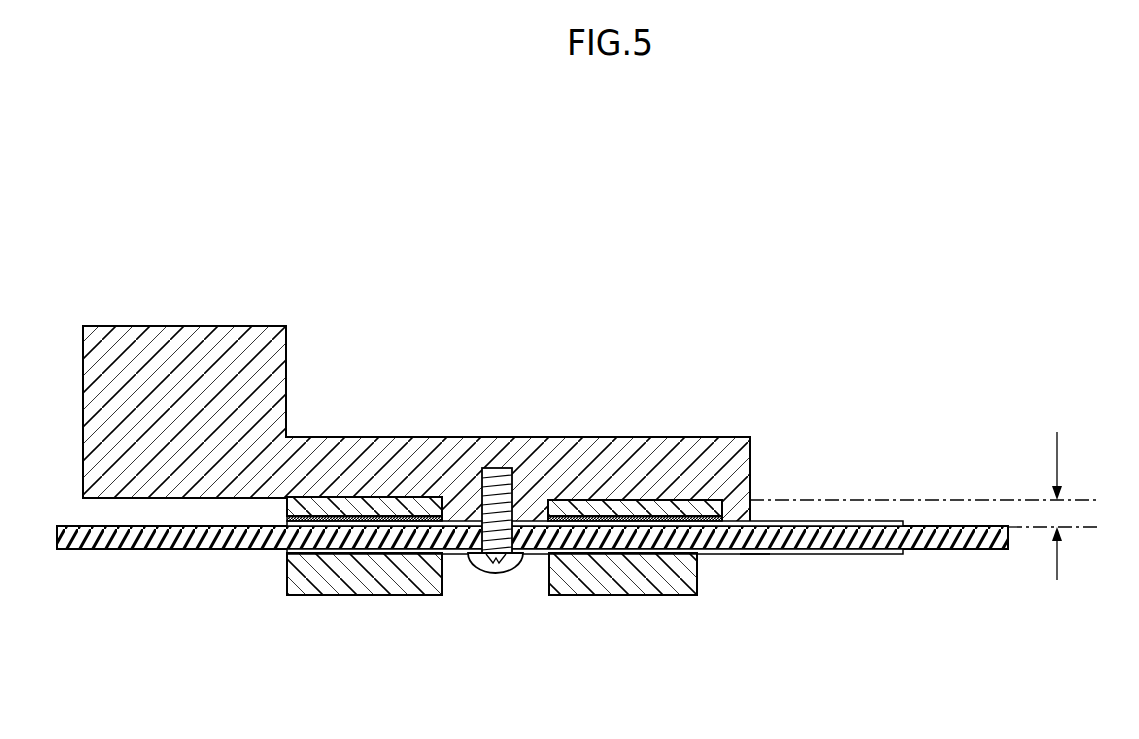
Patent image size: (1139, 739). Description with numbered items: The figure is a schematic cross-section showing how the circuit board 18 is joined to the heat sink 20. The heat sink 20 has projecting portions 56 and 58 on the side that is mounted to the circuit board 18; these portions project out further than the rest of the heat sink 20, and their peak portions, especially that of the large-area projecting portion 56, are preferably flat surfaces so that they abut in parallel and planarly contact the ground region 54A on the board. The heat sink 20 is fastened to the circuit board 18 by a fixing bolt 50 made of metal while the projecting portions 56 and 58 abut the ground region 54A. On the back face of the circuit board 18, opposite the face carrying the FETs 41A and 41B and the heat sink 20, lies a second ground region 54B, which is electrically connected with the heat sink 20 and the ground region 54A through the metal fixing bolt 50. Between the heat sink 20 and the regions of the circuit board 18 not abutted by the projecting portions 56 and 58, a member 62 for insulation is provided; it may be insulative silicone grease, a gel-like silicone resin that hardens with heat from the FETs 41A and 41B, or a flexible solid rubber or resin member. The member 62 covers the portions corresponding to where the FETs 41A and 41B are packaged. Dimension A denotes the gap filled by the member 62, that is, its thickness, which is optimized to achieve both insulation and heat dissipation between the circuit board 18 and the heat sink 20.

The circuit board 18 is at (981, 556).
The heat sink 20 is at (362, 437).
The FET 41A is at (345, 596).
The FET 41B is at (625, 597).
The fixing bolt 50 is at (491, 574).
The ground region 54A is at (889, 521).
The ground region 54B is at (880, 554).
The projecting portion 56 is at (551, 500).
The projecting portion 58 is at (752, 554).
The member for insulation 62 is at (690, 500).
The dimension of the gap A is at (937, 506).